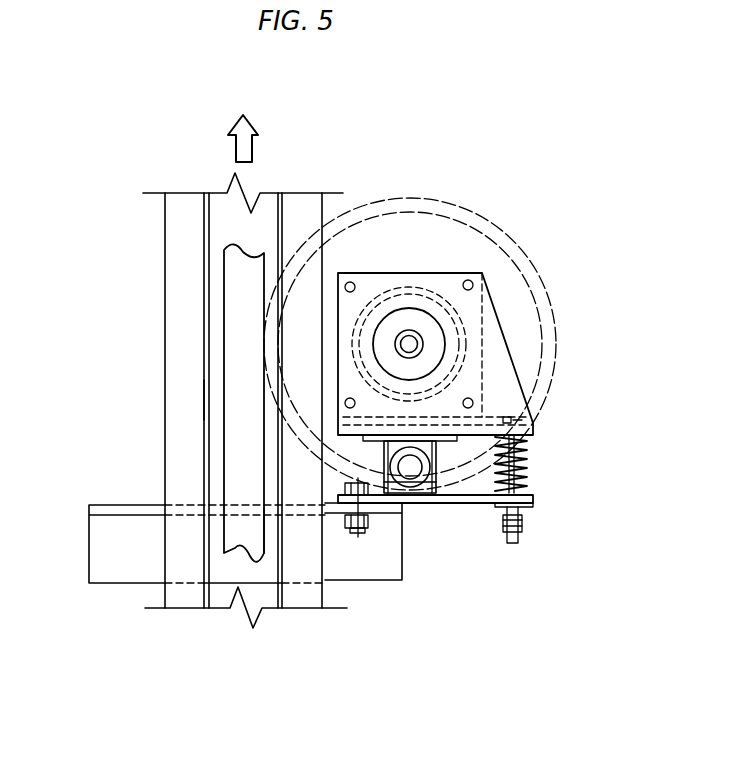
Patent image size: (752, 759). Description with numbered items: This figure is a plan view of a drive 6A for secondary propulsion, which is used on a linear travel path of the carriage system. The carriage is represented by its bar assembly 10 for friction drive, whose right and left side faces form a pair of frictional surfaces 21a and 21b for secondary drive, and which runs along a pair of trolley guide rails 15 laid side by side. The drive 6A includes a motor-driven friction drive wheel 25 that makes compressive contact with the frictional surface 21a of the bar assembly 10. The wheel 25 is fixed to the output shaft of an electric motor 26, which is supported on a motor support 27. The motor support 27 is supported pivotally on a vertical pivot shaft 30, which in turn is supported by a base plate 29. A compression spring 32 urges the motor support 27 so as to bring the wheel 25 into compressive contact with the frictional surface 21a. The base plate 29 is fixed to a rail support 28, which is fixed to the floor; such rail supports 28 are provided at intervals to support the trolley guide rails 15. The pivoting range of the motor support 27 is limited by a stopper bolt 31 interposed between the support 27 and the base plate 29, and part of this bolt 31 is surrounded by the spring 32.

The drive for secondary propulsion 6A is at (427, 295).
The bar assembly 10 is at (222, 318).
The trolley guide rails 15 is at (177, 255).
The frictional surface 21a is at (264, 529).
The frictional surface 21b is at (222, 402).
The friction drive wheel 25 is at (483, 218).
The electric motor 26 is at (497, 312).
The motor support 27 is at (498, 365).
The rail support 28 is at (128, 505).
The base plate 29 is at (470, 503).
The vertical pivot shaft 30 is at (431, 497).
The stopper bolt 31 is at (520, 533).
The compression spring 32 is at (522, 469).